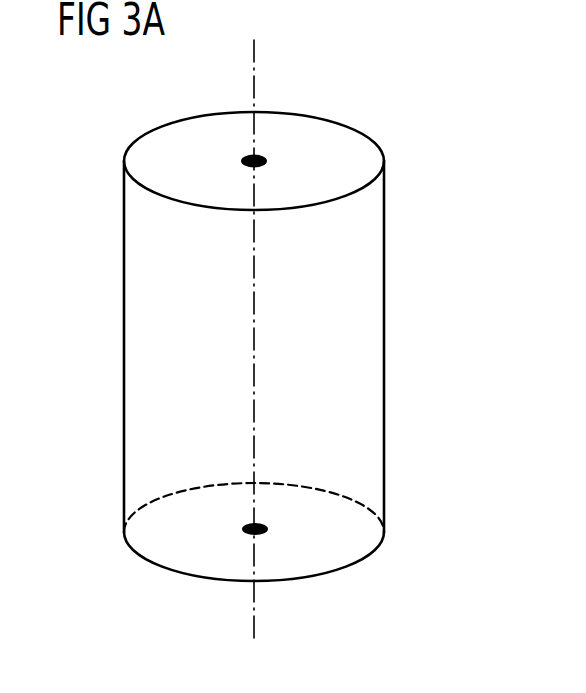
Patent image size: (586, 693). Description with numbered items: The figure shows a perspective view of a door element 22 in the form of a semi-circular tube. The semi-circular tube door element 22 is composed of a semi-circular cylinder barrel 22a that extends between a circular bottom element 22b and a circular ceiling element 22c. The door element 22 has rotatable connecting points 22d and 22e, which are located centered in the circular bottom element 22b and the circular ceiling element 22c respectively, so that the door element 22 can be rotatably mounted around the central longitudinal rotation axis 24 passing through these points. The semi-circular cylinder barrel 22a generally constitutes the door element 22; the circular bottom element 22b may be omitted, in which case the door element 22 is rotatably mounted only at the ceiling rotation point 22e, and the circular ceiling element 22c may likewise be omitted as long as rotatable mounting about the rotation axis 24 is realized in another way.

The door element 22 is at (289, 343).
The semi-circular cylinder barrel 22a is at (365, 360).
The circular bottom element 22b is at (178, 552).
The circular ceiling element 22c is at (180, 135).
The rotatable connecting point 22d is at (267, 528).
The rotatable connecting point 22e is at (268, 163).
The central longitudinal rotation axis 24 is at (254, 58).